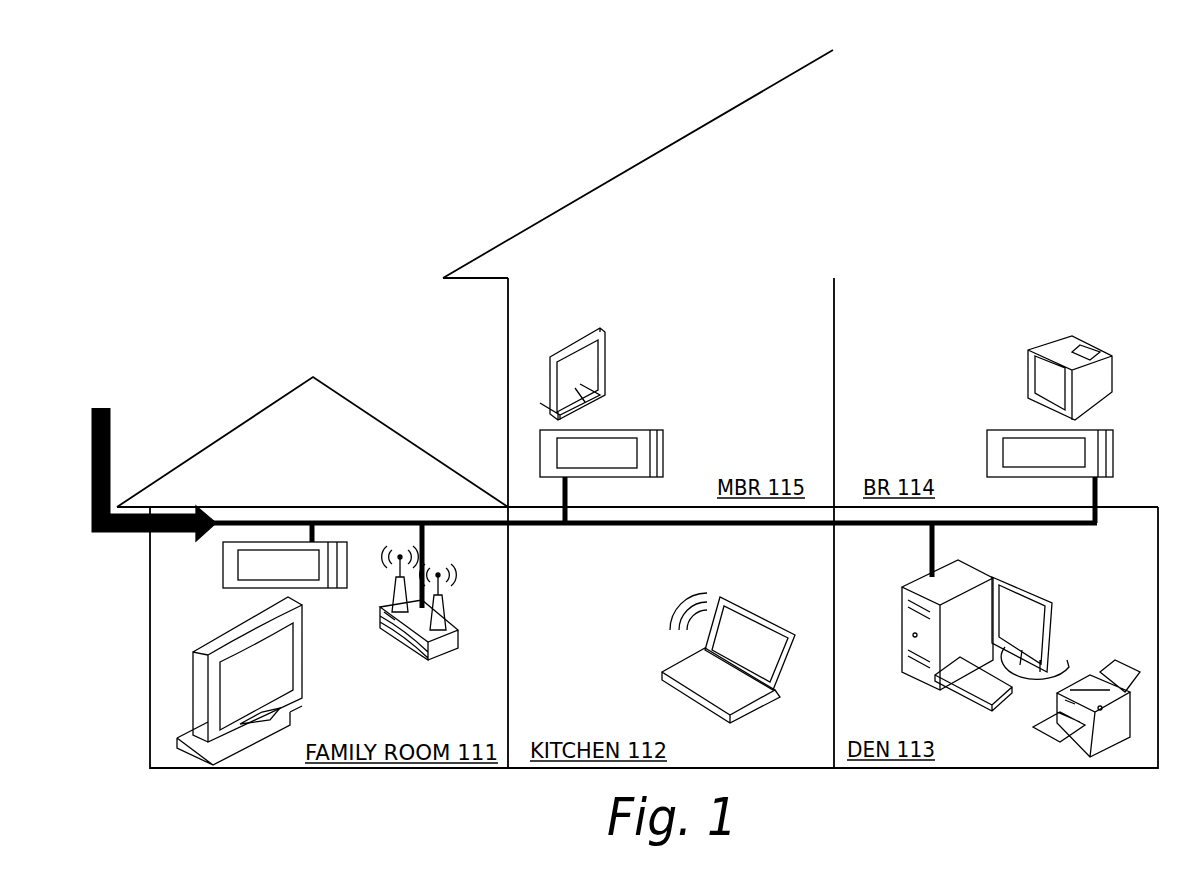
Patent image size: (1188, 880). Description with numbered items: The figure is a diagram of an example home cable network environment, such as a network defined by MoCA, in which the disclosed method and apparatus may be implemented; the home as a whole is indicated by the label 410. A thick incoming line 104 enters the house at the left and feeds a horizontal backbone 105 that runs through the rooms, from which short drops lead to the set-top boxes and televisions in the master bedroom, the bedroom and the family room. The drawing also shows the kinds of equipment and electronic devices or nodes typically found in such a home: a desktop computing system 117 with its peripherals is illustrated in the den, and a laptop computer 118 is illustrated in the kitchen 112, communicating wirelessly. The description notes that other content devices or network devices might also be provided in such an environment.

The incoming broadband service line 104 is at (112, 427).
The home network backbone cable 105 is at (598, 526).
The kitchen 112 is at (259, 577).
The desktop computing system 117 is at (1065, 576).
The laptop computer 118 is at (648, 670).
The home premises 410 is at (1065, 68).